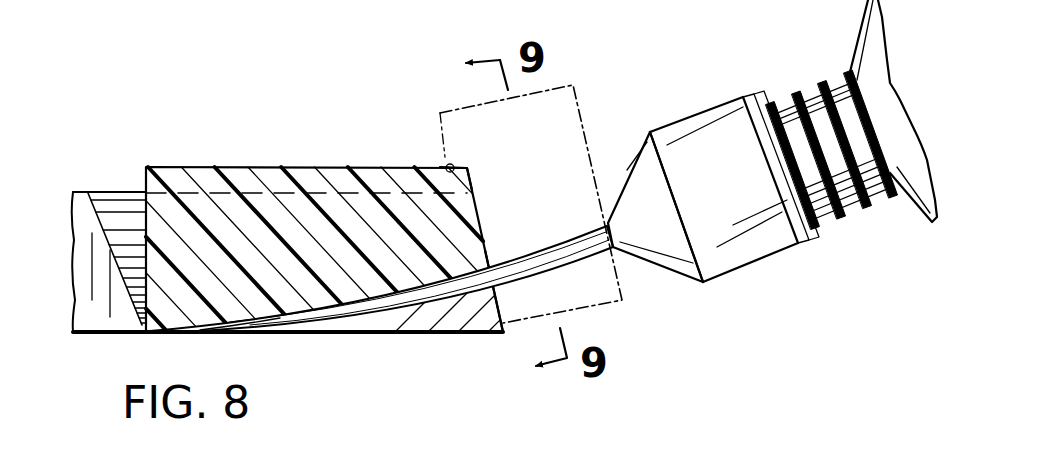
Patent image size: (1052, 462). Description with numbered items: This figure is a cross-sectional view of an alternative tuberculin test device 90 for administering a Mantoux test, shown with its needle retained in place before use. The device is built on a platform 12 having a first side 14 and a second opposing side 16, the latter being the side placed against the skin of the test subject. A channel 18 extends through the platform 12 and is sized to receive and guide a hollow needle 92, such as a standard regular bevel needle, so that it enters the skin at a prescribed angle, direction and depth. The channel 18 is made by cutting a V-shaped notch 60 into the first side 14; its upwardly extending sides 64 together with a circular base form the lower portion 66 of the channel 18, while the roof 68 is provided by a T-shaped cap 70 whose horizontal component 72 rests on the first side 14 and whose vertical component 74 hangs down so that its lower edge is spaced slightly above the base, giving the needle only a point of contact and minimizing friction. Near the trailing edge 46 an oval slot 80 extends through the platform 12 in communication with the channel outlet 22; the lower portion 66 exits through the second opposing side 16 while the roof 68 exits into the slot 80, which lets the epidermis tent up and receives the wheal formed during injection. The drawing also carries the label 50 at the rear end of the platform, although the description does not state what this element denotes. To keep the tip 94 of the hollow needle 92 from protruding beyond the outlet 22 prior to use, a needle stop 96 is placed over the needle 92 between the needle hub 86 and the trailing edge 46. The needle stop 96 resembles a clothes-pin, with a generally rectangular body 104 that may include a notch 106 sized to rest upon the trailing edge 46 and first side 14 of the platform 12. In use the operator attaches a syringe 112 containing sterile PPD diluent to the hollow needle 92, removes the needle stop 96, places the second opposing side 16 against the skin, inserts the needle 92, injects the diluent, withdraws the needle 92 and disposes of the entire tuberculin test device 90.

The platform 12 is at (356, 375).
The first side 14 is at (82, 192).
The second opposing side 16 is at (343, 336).
The channel 18 is at (235, 334).
The outlet 22 is at (210, 334).
The trailing edge 46 is at (472, 175).
The end wall 50 is at (500, 293).
The V-shaped notch 60 is at (124, 210).
The sides 64 is at (127, 251).
The lower portion 66 is at (146, 332).
The roof 68 is at (447, 276).
The T-shaped cap 70 is at (238, 154).
The horizontal component 72 is at (318, 186).
The vertical component 74 is at (377, 235).
The oval slot 80 is at (84, 325).
The needle hub 86 is at (697, 113).
The tuberculin test device 90 is at (346, 201).
The hollow needle 92 is at (545, 250).
The tip 94 is at (243, 333).
The needle stop 96 is at (582, 88).
The rectangular body 104 is at (522, 130).
The notch 106 is at (447, 162).
The syringe 112 is at (853, 43).